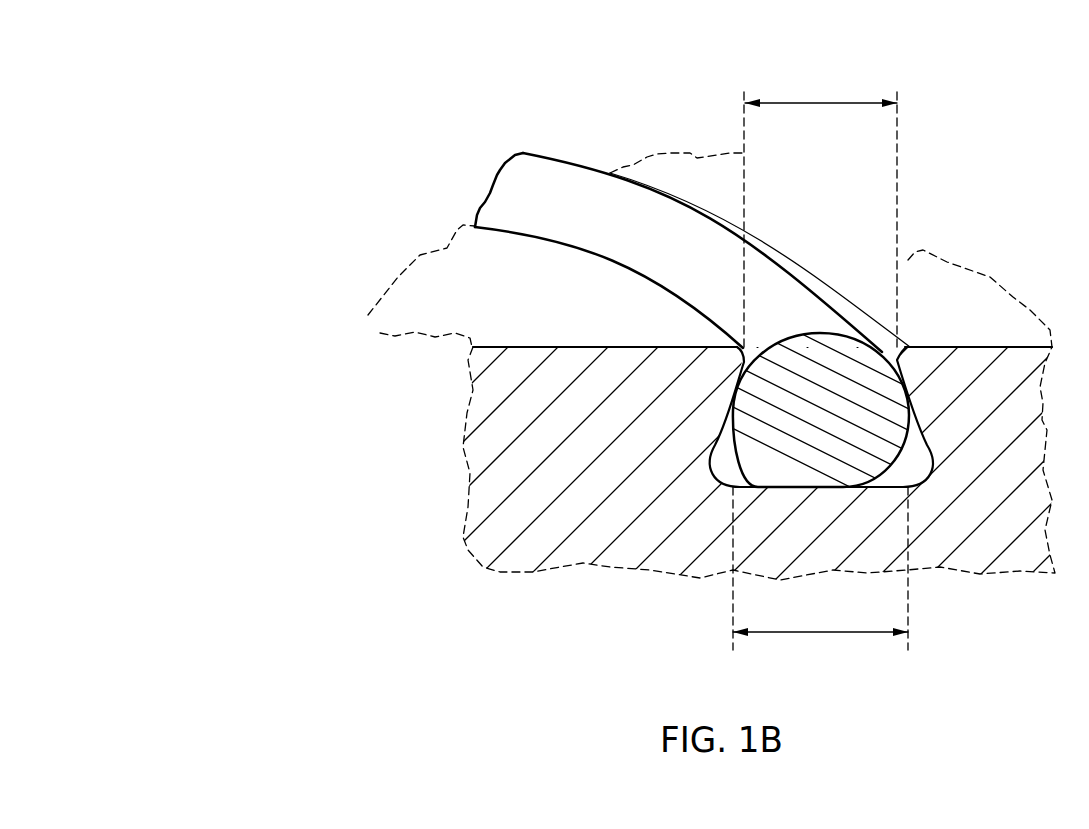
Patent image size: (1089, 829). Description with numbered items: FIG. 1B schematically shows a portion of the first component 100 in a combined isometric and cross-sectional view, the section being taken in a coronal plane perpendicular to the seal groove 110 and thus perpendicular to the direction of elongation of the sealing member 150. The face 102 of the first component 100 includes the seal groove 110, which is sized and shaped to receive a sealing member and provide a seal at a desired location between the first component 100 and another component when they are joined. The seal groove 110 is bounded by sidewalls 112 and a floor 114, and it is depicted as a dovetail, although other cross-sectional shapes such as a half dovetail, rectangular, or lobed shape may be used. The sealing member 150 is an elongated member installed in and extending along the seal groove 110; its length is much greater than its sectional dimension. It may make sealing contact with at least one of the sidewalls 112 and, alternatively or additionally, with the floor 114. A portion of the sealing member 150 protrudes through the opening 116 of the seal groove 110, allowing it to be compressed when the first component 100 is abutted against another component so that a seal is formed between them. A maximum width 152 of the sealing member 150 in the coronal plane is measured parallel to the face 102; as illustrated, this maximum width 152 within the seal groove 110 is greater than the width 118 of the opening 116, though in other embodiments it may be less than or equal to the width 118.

The first component 100 is at (209, 278).
The face 102 is at (413, 288).
The seal groove 110 is at (927, 488).
The sidewalls 112 is at (723, 430).
The floor 114 is at (772, 490).
The opening 116 is at (874, 336).
The width of the opening 118 is at (822, 103).
The sealing member 150 is at (557, 179).
The maximum width 152 is at (823, 633).